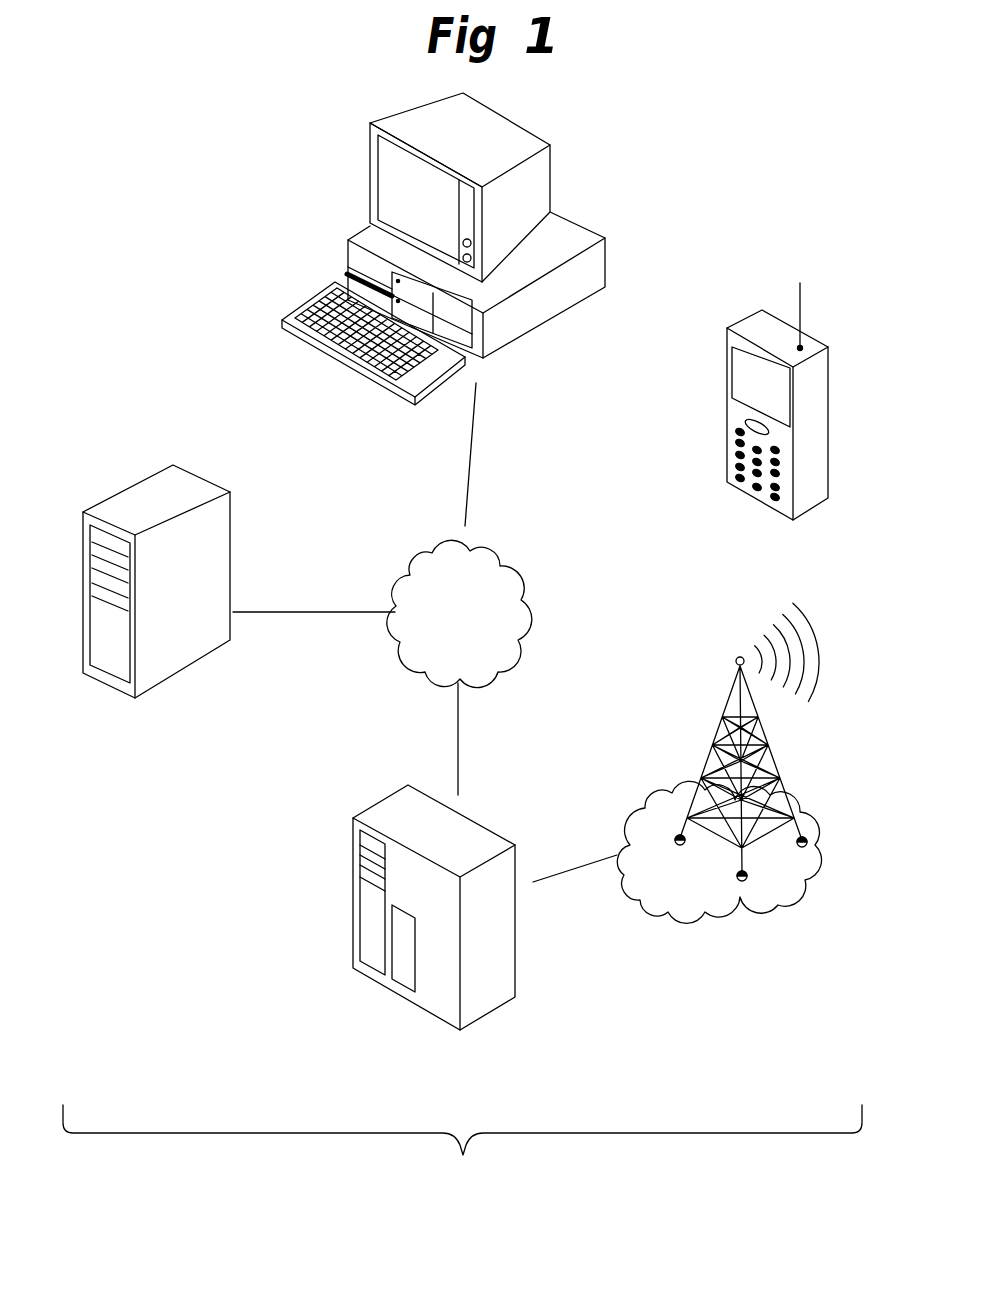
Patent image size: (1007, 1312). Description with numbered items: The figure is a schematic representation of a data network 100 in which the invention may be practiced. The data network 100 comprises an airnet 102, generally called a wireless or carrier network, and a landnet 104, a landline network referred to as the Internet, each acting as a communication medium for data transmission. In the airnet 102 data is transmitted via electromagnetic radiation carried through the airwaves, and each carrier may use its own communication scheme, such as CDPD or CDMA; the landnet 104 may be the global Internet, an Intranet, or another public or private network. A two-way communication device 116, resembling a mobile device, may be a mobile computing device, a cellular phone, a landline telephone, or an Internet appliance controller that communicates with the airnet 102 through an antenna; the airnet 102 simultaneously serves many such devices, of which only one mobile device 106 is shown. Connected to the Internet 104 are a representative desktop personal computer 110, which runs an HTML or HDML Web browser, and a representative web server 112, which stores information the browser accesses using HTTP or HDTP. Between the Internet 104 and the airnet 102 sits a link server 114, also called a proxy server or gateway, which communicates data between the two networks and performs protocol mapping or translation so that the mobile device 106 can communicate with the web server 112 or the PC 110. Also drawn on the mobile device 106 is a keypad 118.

The data network 100 is at (462, 1144).
The airnet 102 is at (815, 846).
The landnet 104 is at (432, 548).
The mobile device 106 is at (727, 391).
The desktop personal computer 110 is at (500, 343).
The web server 112 is at (157, 473).
The link server 114 is at (353, 903).
The two-way communication device 116 is at (780, 398).
The keypad of mobile phone 118 is at (725, 483).